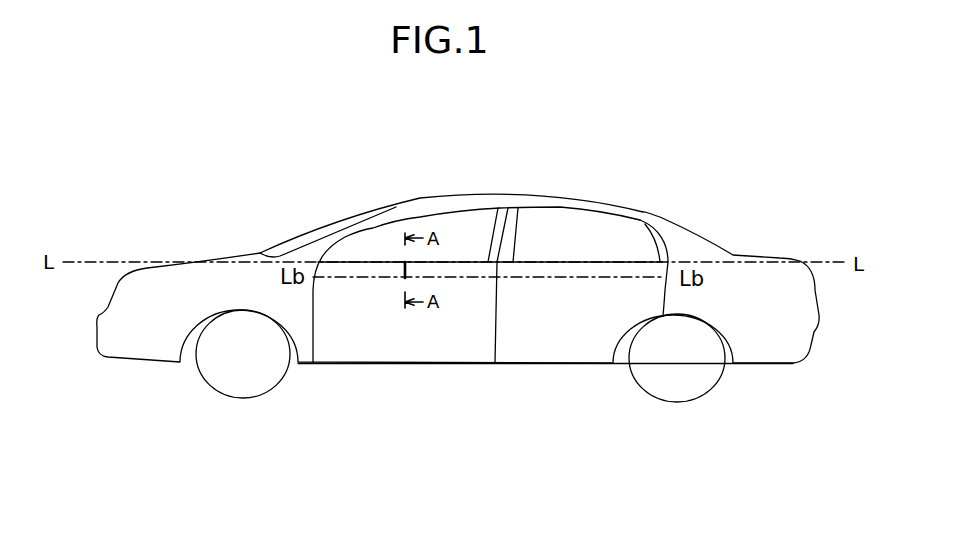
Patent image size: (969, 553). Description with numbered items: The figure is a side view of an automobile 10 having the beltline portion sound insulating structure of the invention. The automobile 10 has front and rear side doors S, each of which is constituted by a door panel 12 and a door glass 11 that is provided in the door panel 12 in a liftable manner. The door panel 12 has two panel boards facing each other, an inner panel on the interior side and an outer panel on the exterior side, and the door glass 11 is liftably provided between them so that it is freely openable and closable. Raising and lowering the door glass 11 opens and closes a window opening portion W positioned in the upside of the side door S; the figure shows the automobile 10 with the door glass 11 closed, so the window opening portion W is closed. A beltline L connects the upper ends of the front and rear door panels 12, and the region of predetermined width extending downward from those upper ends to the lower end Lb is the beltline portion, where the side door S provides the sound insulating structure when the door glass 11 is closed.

The automobile 10 is at (458, 272).
The door glass 11 is at (405, 218).
The door panel 12 is at (373, 365).
The window opening portion W is at (463, 223).
The side door S is at (455, 338).